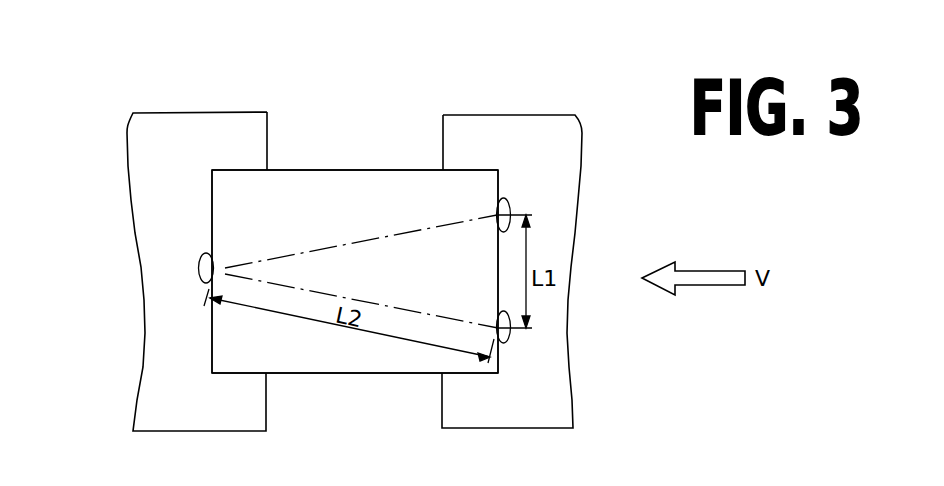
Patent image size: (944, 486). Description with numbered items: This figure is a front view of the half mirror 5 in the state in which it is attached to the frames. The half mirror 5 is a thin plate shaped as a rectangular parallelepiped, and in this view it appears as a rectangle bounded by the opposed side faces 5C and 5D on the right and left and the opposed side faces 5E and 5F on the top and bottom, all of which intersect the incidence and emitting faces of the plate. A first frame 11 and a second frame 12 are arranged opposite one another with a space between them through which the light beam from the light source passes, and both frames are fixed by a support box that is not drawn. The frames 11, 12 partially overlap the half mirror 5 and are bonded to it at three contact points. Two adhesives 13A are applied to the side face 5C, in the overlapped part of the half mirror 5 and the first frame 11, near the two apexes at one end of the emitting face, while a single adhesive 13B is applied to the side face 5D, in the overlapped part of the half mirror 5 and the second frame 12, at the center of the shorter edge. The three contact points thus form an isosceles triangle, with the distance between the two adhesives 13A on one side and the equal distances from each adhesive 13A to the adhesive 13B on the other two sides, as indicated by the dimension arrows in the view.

The half mirror 5 is at (312, 340).
The side face 5C is at (577, 188).
The side face 5D is at (212, 211).
The side face 5E is at (367, 169).
The side face 5F is at (368, 374).
The first frame 11 is at (533, 121).
The second frame 12 is at (237, 121).
The adhesives 13A is at (498, 203).
The adhesive 13B is at (200, 272).